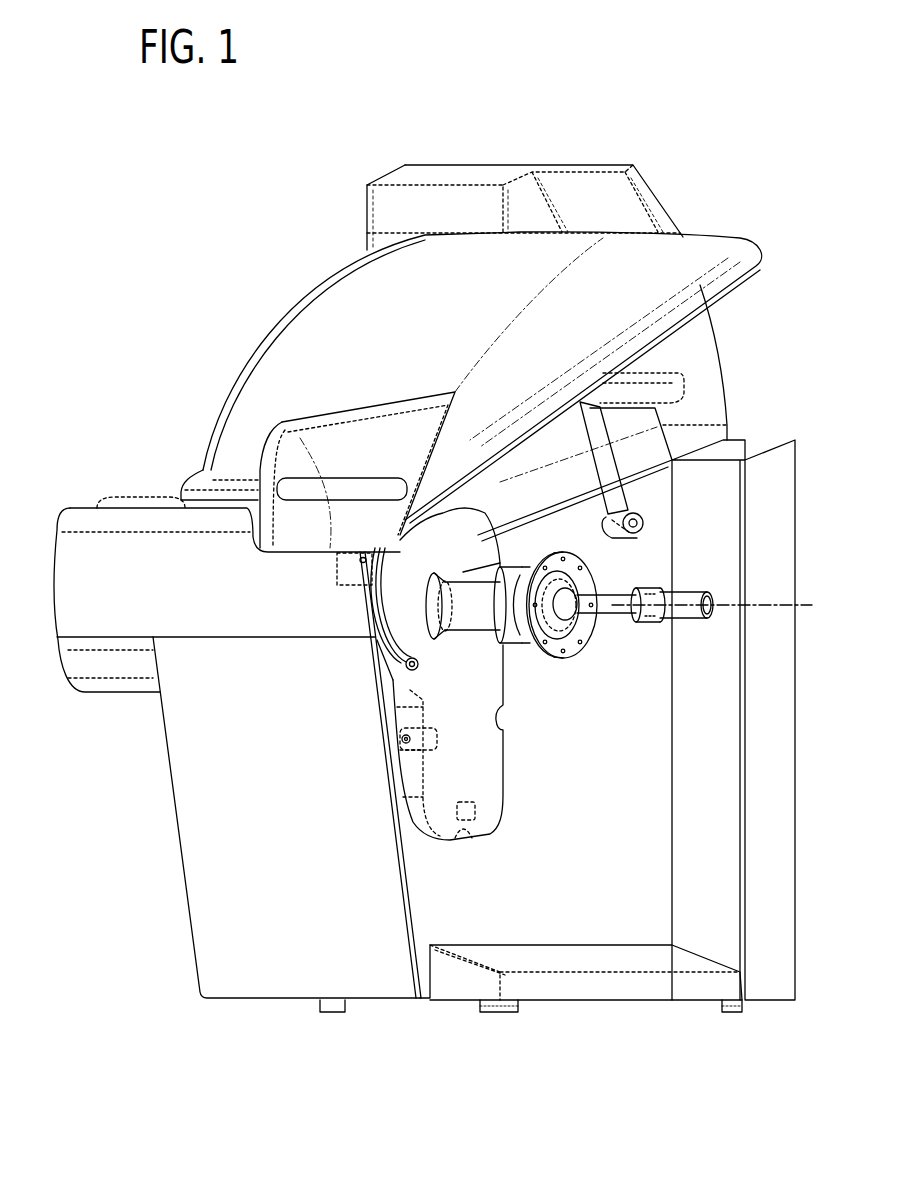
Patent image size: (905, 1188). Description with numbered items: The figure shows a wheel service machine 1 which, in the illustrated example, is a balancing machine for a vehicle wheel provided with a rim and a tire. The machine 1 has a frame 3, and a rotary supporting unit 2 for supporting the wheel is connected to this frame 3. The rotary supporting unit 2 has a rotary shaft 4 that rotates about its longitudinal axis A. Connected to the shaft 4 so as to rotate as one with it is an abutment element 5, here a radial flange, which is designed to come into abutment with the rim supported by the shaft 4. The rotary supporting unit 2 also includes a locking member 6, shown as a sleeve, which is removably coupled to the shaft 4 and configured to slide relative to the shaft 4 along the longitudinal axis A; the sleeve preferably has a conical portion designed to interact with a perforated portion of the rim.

The wheel service machine 1 is at (424, 582).
The rotary supporting unit 2 is at (467, 652).
The frame 3 is at (272, 917).
The rotary shaft 4 is at (603, 614).
The abutment element 5 is at (553, 655).
The locking member 6 is at (677, 622).
The longitudinal axis A is at (760, 603).